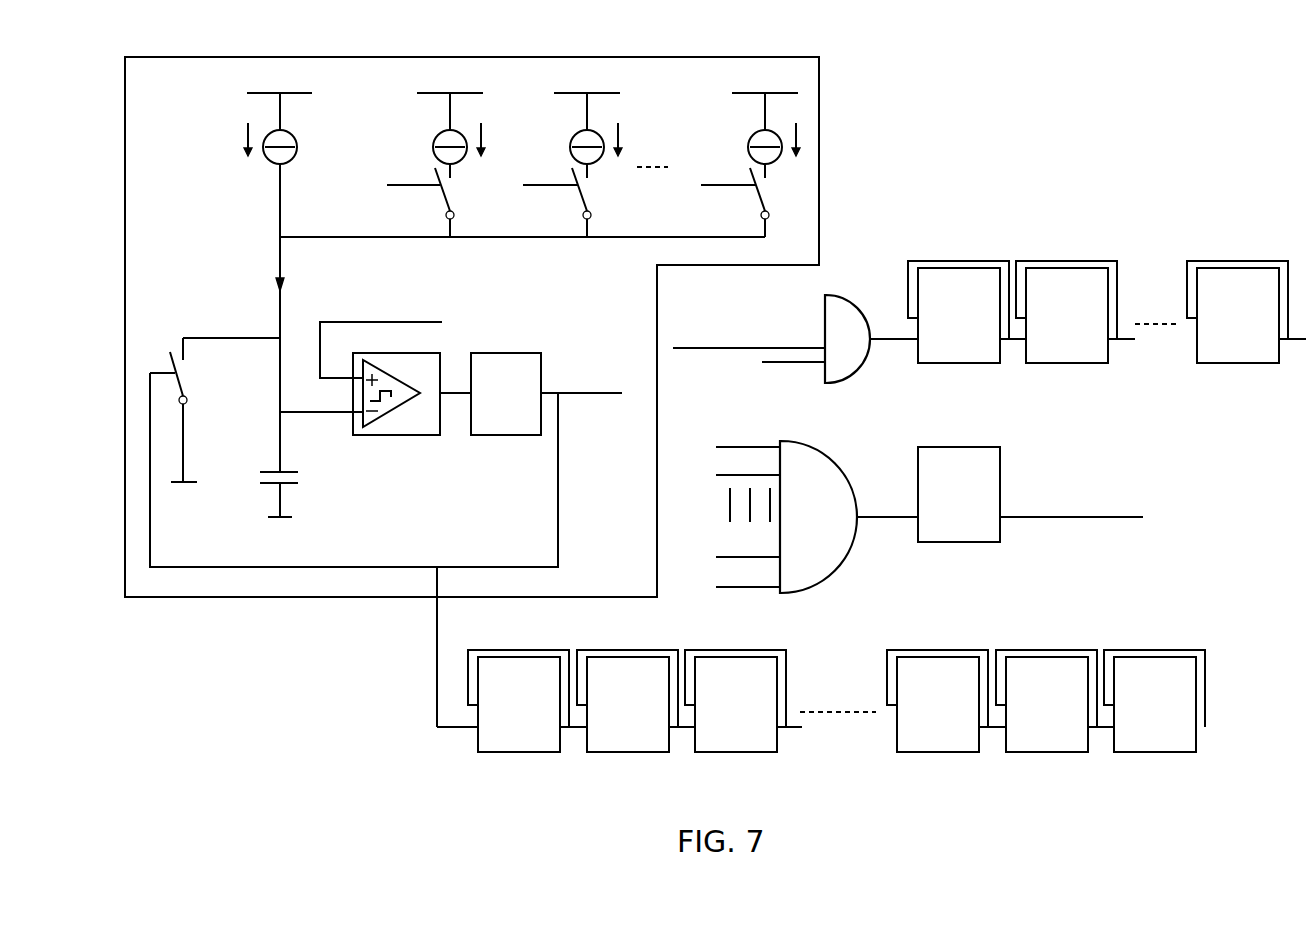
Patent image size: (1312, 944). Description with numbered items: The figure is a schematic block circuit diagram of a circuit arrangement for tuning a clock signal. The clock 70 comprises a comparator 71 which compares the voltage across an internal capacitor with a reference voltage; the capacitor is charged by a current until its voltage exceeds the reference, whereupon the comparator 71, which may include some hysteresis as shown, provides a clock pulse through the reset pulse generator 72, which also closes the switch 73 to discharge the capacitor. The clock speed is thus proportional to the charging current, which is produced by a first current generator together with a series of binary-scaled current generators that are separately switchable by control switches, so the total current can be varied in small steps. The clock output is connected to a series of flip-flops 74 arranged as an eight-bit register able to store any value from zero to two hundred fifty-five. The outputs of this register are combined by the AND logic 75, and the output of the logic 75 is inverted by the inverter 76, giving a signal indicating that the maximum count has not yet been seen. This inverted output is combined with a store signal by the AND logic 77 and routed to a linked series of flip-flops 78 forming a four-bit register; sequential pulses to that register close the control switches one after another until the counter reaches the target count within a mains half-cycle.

The clock 70 is at (177, 100).
The comparator 71 is at (413, 423).
The reset pulse generator 72 is at (505, 435).
The switch 73 is at (186, 380).
The flip-flop 74 is at (532, 717).
The AND logic 75 is at (827, 531).
The inverter 76 is at (957, 542).
The AND logic 77 is at (845, 295).
The flip-flops 78 is at (961, 363).